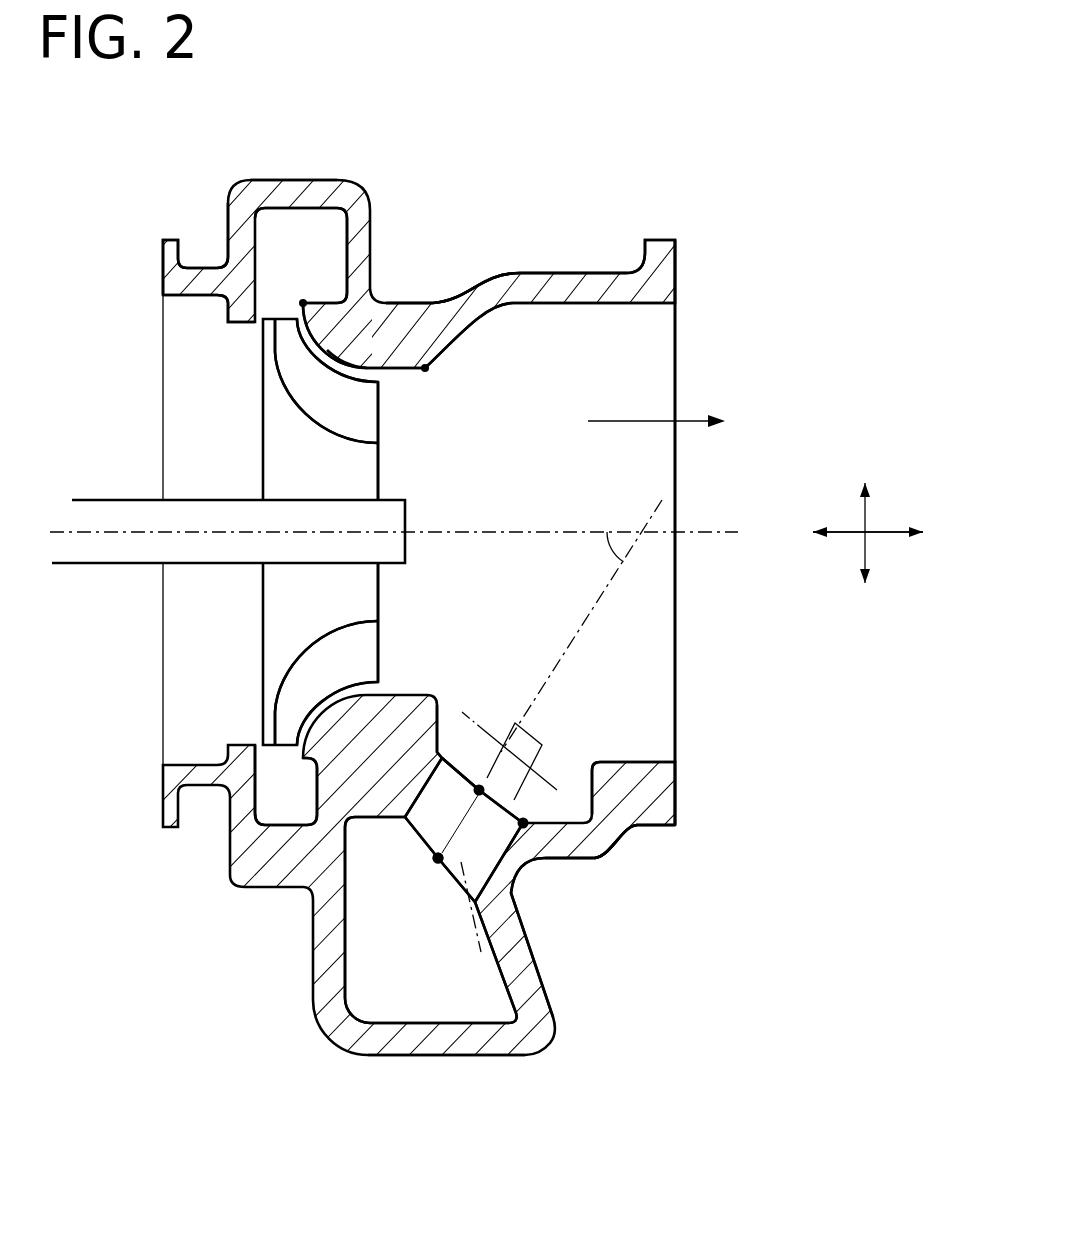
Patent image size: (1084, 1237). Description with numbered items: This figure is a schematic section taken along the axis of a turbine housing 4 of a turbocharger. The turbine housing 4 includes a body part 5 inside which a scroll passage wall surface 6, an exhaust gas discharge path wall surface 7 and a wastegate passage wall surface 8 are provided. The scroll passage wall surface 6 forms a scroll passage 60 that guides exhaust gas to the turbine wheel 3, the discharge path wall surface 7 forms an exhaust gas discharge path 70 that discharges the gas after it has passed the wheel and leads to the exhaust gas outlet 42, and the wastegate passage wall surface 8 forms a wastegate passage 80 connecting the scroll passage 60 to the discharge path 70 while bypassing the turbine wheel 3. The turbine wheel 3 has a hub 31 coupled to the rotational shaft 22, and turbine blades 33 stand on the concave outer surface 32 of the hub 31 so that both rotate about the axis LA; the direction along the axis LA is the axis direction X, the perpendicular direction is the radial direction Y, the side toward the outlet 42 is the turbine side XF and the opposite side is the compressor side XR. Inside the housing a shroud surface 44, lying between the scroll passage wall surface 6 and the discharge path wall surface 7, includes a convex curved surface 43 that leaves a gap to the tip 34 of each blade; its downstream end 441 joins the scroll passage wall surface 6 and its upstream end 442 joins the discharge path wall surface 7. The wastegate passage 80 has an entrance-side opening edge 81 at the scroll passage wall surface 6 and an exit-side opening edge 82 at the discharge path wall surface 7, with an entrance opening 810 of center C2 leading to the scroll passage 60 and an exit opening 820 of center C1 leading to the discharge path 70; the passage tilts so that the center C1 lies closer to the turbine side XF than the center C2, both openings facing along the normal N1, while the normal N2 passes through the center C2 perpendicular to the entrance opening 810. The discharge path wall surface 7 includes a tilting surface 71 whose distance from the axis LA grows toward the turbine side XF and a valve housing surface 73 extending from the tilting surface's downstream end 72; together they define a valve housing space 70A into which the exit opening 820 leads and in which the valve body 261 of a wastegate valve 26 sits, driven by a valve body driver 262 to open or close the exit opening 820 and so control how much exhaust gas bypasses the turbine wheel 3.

The turbine wheel 3 is at (247, 423).
The turbine housing 4 is at (265, 167).
The body part 5 is at (265, 167).
The scroll passage wall surface 6 is at (320, 186).
The exhaust gas discharge path wall surface 7 is at (616, 308).
The wastegate passage wall surface 8 is at (514, 893).
The rotational shaft 22 is at (92, 500).
The wastegate valve 26 is at (622, 848).
The hub 31 is at (380, 477).
The outer surface 32 is at (372, 426).
The turbine blades 33 is at (380, 405).
The tip 34 is at (330, 365).
The exhaust gas outlet 42 is at (677, 305).
The convex curved surface 43 is at (433, 300).
The shroud surface 44 is at (433, 300).
The scroll passage 60 is at (312, 270).
The exhaust gas discharge path 70 is at (591, 466).
The valve housing space 70A is at (677, 797).
The tilting surface 71 is at (447, 768).
The downstream end 72 is at (548, 860).
The valve housing surface 73 is at (608, 845).
The wastegate passage 80 is at (500, 850).
The entrance-side opening edge 81 is at (410, 820).
The exit-side opening edge 82 is at (478, 778).
The valve body 261 is at (622, 848).
The valve body driver 262 is at (533, 738).
The downstream end 441 is at (303, 303).
The upstream end 442 is at (425, 368).
The entrance opening 810 is at (432, 866).
The exit opening 820 is at (500, 810).
The center of the exit opening C1 is at (481, 785).
The center of the entrance opening C2 is at (428, 863).
The normal N1 is at (613, 580).
The normal N2 is at (481, 950).
The axis LA is at (155, 533).
The axis direction X is at (845, 530).
The radial direction Y is at (867, 507).
The compressor side XR is at (815, 534).
The turbine side XF is at (912, 534).